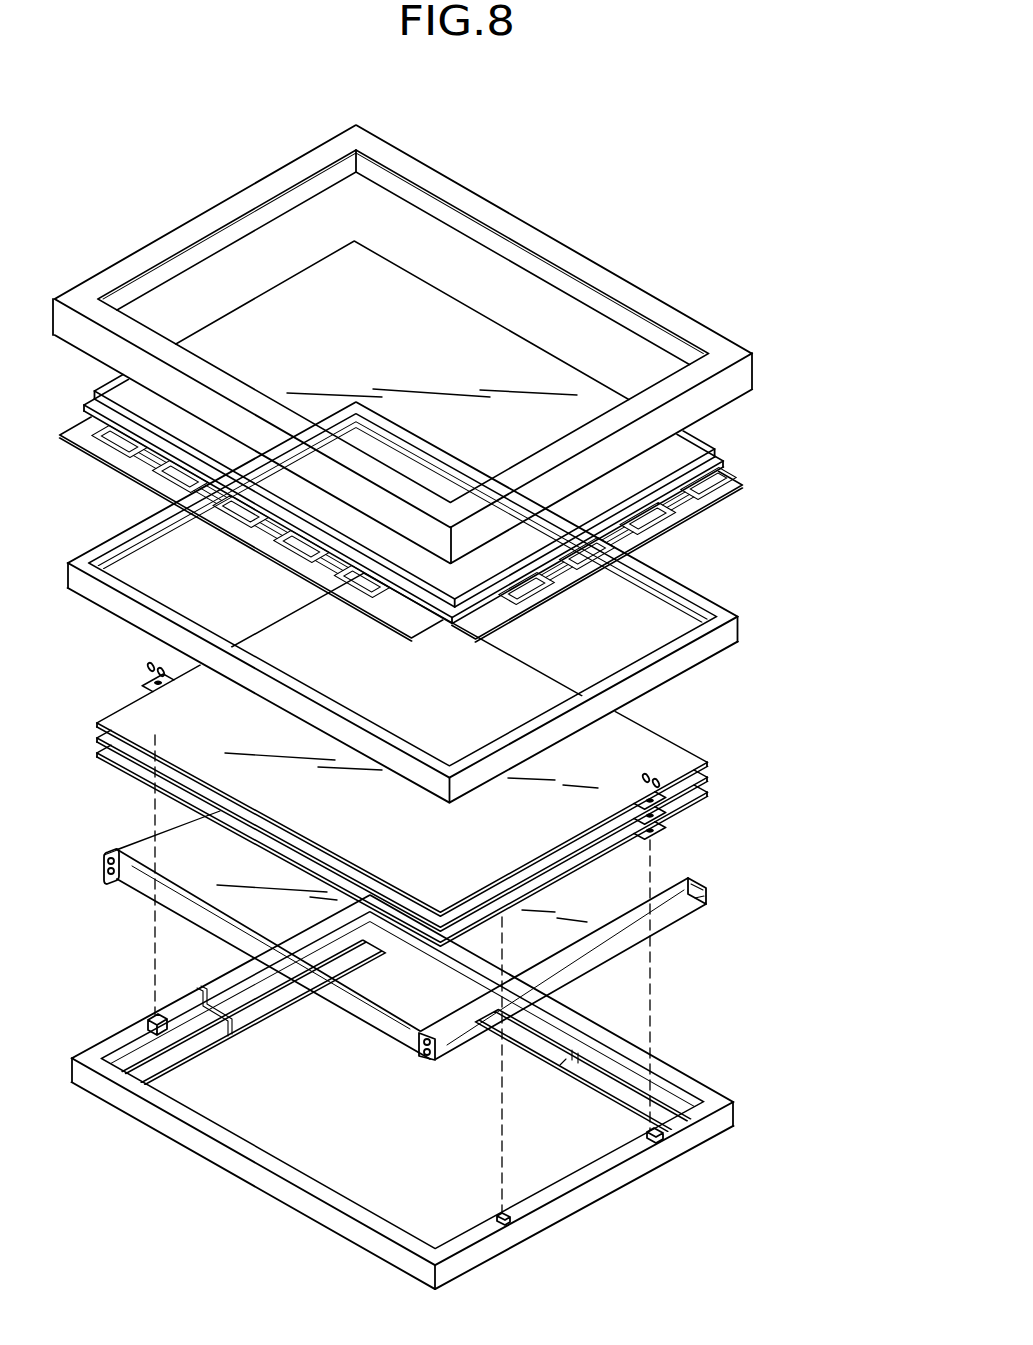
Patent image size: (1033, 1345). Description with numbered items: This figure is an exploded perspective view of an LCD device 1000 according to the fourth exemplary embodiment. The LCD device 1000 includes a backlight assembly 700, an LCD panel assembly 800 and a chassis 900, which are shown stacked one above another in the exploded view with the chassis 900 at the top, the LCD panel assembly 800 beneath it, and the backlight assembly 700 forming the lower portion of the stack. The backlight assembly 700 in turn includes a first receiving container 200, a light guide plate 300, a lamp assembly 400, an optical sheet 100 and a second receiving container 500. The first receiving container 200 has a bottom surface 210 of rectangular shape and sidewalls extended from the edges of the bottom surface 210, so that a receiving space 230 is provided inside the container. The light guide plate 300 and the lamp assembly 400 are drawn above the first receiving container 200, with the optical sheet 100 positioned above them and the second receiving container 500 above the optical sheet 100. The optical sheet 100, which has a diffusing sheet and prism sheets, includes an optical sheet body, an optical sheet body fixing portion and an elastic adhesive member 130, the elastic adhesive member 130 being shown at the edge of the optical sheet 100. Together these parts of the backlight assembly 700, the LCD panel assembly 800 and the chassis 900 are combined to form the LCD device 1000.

The LCD device 1000 is at (599, 194).
The chassis 900 is at (670, 300).
The LCD panel assembly 800 is at (735, 452).
The second receiving container 500 is at (700, 588).
The optical sheet 100 is at (698, 750).
The elastic adhesive member 130 is at (656, 774).
The light guide plate 300 is at (652, 872).
The lamp assembly 400 is at (700, 924).
The backlight assembly 700 is at (809, 616).
The first receiving container 200 is at (612, 1206).
The bottom surface 210 is at (570, 1060).
The receiving space 230 is at (423, 1139).